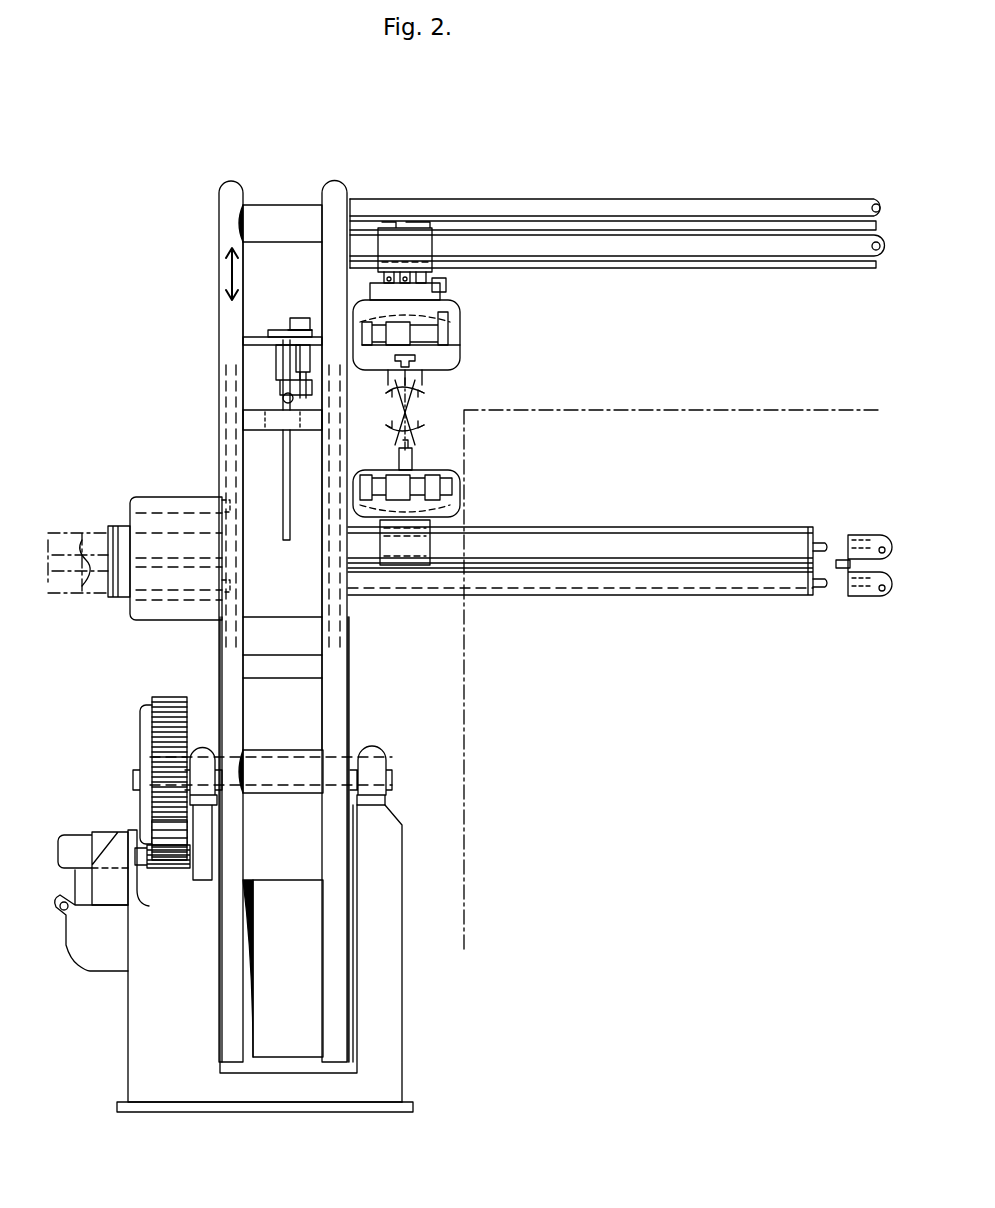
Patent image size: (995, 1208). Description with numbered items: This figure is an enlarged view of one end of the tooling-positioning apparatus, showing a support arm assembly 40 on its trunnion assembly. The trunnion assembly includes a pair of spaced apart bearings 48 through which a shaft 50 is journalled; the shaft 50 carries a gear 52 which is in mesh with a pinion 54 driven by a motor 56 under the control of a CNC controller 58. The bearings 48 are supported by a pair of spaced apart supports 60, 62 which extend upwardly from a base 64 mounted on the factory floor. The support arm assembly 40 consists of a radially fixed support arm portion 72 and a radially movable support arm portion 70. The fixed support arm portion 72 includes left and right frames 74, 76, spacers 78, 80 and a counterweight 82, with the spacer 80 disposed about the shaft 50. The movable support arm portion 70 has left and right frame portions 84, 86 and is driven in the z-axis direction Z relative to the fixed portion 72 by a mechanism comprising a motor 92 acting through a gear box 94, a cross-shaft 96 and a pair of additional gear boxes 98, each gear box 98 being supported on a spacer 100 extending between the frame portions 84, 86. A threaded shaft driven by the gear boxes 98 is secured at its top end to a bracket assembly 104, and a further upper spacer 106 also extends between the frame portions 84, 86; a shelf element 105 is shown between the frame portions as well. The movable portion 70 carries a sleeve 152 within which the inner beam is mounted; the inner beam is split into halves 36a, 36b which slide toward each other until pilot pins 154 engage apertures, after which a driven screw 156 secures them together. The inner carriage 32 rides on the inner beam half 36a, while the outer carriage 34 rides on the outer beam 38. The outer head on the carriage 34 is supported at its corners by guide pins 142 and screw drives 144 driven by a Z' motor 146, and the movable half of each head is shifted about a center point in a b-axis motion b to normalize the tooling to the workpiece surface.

The z-axis direction Z is at (232, 274).
The movable support arm portion 70 is at (206, 242).
The left frame portion 84 is at (218, 309).
The right frame portion 86 is at (322, 256).
The upper spacer 106 is at (294, 205).
The shelf 105 is at (250, 336).
The bracket assembly 104 is at (268, 330).
The motor 92 is at (309, 320).
The gear box 98 is at (276, 404).
The gear box 94 is at (308, 396).
The spacer 100 is at (282, 475).
The cross-shaft 96 is at (302, 401).
The outer beam 38 is at (743, 198).
The guide pins 142 is at (392, 246).
The screw drives 144 is at (440, 278).
The Z' motor 146 is at (440, 296).
The outer carriage 34 is at (460, 250).
The b-axis motion b is at (406, 408).
The inner carriage 32 is at (444, 545).
The inner beam half 36a is at (626, 526).
The pilot pins 154 is at (820, 532).
The inner beam half 36b is at (870, 526).
The driven screw 156 is at (837, 571).
The sleeve 152 is at (184, 498).
The fixed support arm portion 72 is at (211, 662).
The left frame 74 is at (222, 691).
The right frame 76 is at (342, 691).
The first support arm assembly 40 is at (368, 650).
The spacer 78 is at (283, 672).
The spacer 80 is at (299, 750).
The counterweight 82 is at (303, 880).
The gear 52 is at (166, 698).
The shaft 50 is at (157, 766).
The bearings 48 is at (202, 748).
The support 62 is at (389, 919).
The support 60 is at (184, 1021).
The base 64 is at (274, 1103).
The motor 56 is at (75, 836).
The pinion 54 is at (164, 872).
The CNC controller 58 is at (86, 962).